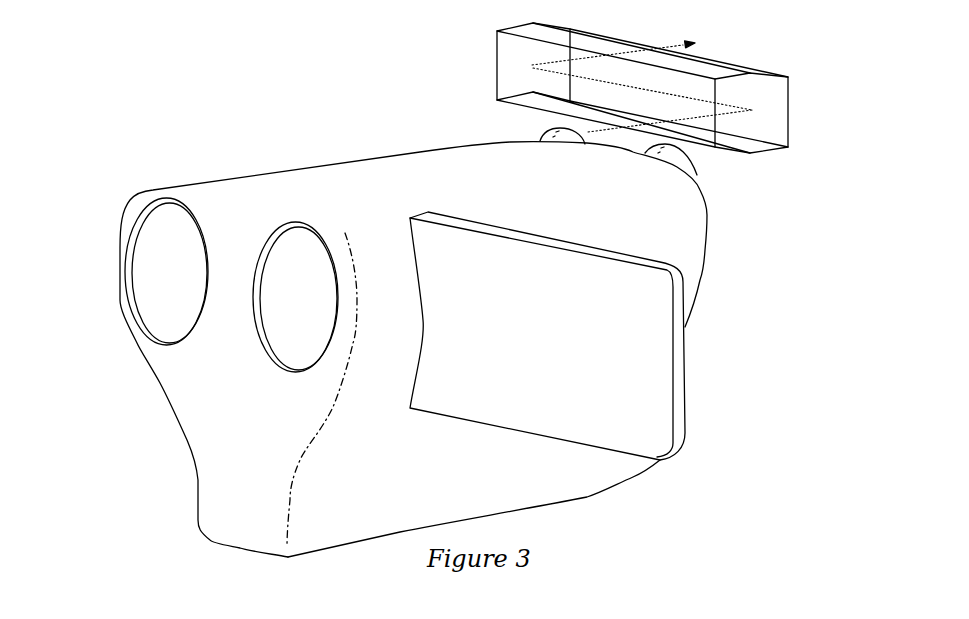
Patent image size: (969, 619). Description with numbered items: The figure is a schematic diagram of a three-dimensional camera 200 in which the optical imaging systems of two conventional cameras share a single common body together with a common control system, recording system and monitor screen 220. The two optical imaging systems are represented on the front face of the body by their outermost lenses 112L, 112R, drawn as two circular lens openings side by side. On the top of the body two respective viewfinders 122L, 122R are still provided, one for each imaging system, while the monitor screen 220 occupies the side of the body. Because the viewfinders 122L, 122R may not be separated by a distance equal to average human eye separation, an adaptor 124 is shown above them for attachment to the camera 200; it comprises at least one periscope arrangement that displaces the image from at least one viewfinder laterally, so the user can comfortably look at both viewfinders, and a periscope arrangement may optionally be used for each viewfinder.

The outermost lens 112R is at (130, 227).
The outermost lens 112L is at (317, 227).
The viewfinder 122R is at (560, 148).
The viewfinder 122L is at (657, 165).
The adaptor 124 is at (642, 88).
The 3D camera 200 is at (685, 219).
The monitor screen 220 is at (653, 398).